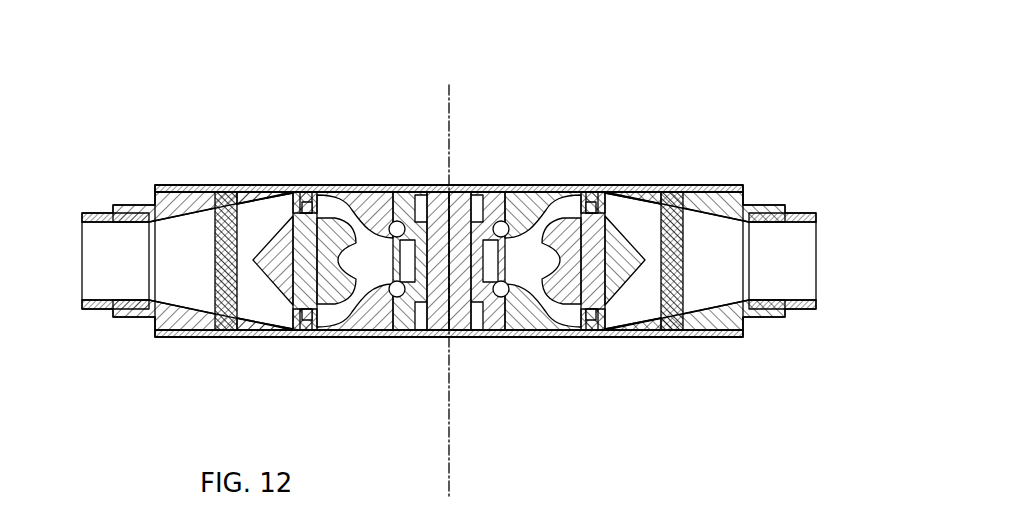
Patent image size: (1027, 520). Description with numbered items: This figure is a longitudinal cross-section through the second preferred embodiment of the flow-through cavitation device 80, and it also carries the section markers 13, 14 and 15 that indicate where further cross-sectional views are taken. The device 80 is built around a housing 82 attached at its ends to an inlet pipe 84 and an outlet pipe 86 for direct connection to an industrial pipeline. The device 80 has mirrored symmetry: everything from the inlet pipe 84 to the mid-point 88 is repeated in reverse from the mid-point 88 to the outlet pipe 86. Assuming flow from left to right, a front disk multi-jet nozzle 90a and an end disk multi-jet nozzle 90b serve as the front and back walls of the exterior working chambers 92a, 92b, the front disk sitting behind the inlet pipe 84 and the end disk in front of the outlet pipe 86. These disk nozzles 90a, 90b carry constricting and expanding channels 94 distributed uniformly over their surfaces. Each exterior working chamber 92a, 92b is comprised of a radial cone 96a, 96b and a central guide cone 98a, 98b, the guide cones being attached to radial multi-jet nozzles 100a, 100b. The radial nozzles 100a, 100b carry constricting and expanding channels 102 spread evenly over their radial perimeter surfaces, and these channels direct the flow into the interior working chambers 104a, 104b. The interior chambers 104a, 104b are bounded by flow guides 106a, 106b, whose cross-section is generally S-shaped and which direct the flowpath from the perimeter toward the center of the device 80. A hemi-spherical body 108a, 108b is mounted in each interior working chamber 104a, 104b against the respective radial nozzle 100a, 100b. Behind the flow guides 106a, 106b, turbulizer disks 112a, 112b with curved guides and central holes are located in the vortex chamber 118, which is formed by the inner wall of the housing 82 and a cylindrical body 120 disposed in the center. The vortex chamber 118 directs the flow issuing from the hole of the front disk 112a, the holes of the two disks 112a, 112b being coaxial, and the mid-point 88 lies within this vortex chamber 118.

The flow-through cavitation device 80 is at (220, 74).
The housing 82 is at (449, 207).
The inlet pipe 84 is at (89, 241).
The outlet pipe 86 is at (799, 243).
The mid-point 88 is at (456, 487).
The front disk multi-jet nozzle 90a is at (203, 239).
The end disk multi-jet nozzle 90b is at (695, 238).
The exterior working chamber 92a is at (240, 277).
The exterior working chamber 92b is at (656, 276).
The constricting and expanding channels 94 is at (452, 223).
The radial cone 96a is at (248, 217).
The radial cone 96b is at (637, 238).
The central guide cone 98a is at (254, 300).
The central guide cone 98b is at (652, 297).
The radial multi-jet nozzle 100a is at (272, 299).
The radial multi-jet nozzle 100b is at (630, 296).
The constricting and expanding channels 102 is at (445, 145).
The interior working chamber 104a is at (379, 295).
The interior working chamber 104b is at (538, 317).
The flow guide 106a is at (343, 217).
The flow guide 106b is at (560, 212).
The hemi-spherical body 108a is at (307, 326).
The hemi-spherical body 108b is at (584, 318).
The turbulizer disk 112a is at (371, 329).
The turbulizer disk 112b is at (526, 342).
The vortex chamber 118 is at (491, 204).
The cylindrical body 120 is at (410, 328).
The section line 13 is at (420, 185).
The section line 14 is at (317, 185).
The section line 15 is at (467, 157).